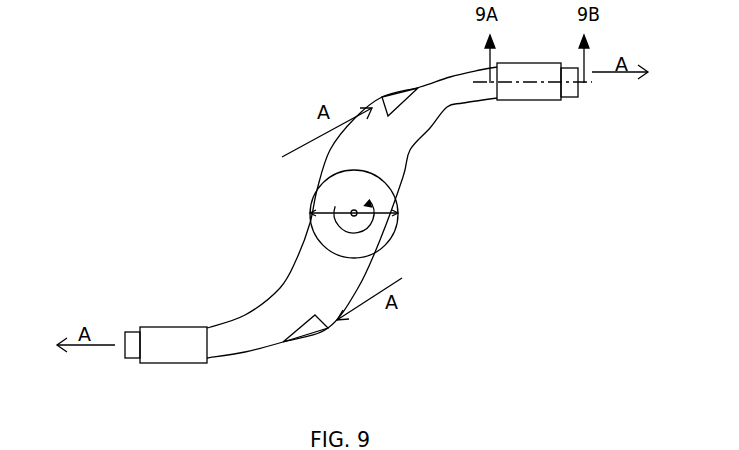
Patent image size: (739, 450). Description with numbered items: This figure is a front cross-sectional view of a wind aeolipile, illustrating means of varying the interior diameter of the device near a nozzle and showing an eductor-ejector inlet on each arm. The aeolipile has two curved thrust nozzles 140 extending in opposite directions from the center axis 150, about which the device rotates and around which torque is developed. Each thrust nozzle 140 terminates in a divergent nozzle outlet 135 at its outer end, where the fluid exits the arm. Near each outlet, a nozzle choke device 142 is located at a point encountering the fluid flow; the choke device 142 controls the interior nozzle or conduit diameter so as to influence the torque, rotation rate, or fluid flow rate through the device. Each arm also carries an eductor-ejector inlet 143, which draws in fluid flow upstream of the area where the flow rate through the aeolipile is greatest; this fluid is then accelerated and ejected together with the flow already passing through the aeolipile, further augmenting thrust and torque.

The divergent nozzle outlet 135 is at (118, 353).
The thrust nozzle 140 is at (267, 305).
The nozzle choke device 142 is at (167, 327).
The eductor-ejector inlet 143 is at (393, 90).
The center axis 150 is at (354, 213).